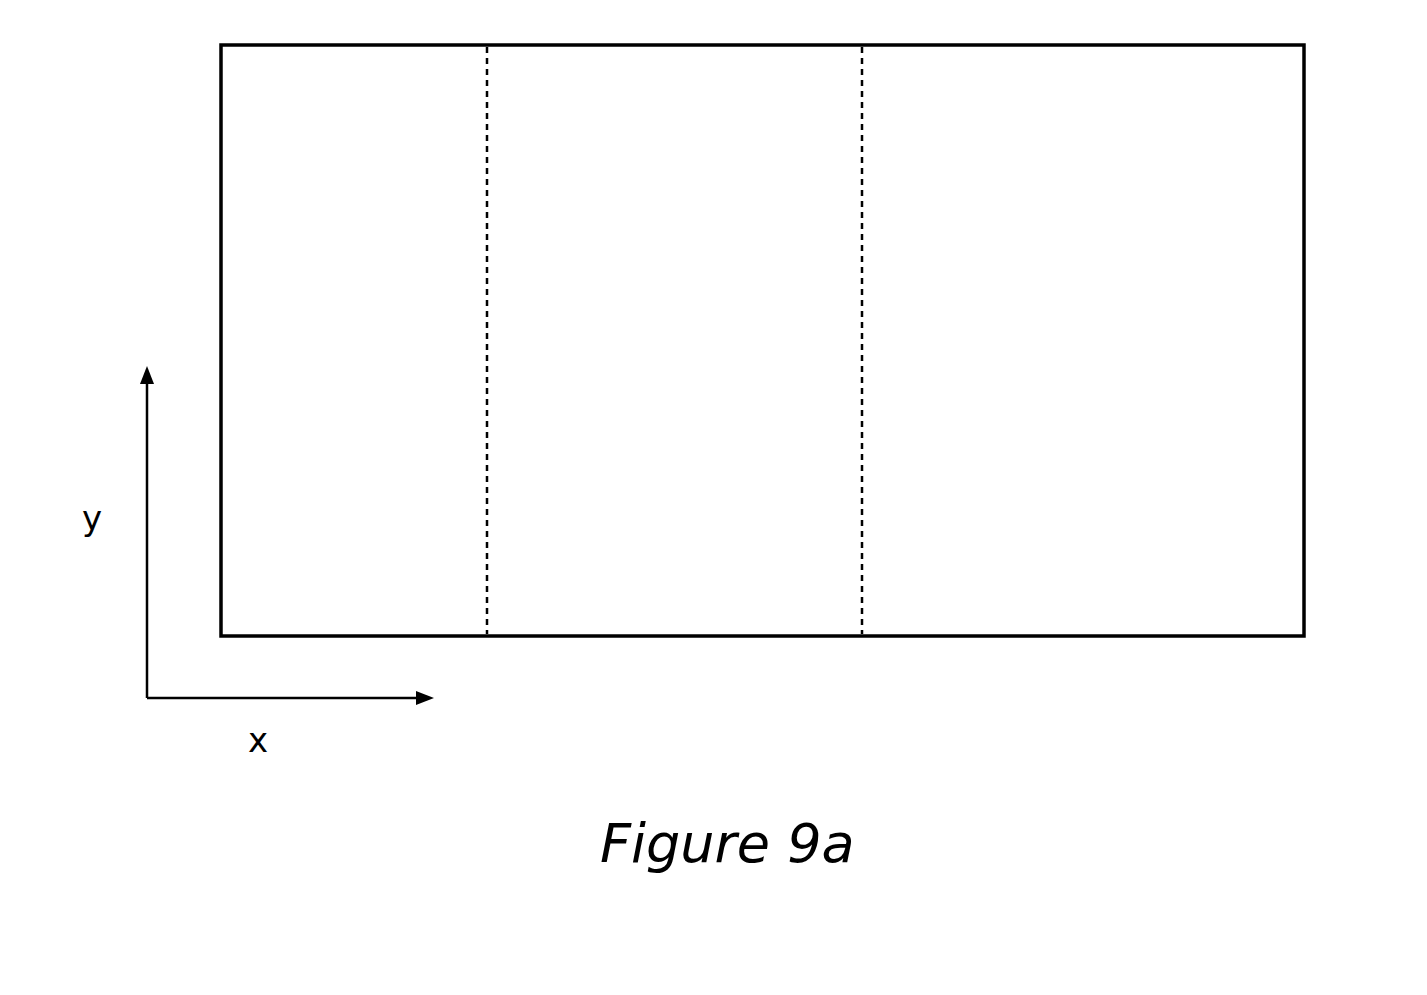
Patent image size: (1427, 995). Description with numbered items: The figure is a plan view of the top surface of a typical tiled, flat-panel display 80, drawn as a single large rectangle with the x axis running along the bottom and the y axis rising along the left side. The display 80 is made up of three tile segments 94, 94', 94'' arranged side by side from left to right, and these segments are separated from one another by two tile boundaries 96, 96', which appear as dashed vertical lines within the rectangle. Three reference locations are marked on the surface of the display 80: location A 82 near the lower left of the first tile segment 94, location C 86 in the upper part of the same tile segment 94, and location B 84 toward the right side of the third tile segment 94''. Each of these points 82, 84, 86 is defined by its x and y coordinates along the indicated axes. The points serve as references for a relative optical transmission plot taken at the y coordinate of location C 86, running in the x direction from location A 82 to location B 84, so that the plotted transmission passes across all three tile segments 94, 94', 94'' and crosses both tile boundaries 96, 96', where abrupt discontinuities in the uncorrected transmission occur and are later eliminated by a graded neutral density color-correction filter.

The tiled flat-panel display 80 is at (702, 203).
The location A 82 is at (338, 535).
The location B 84 is at (1225, 438).
The location C 86 is at (300, 170).
The tile segment 94 is at (360, 317).
The tile segment 94' is at (669, 317).
The tile segment 94'' is at (1060, 317).
The tile boundary 96 is at (552, 340).
The tile boundary 96' is at (946, 340).